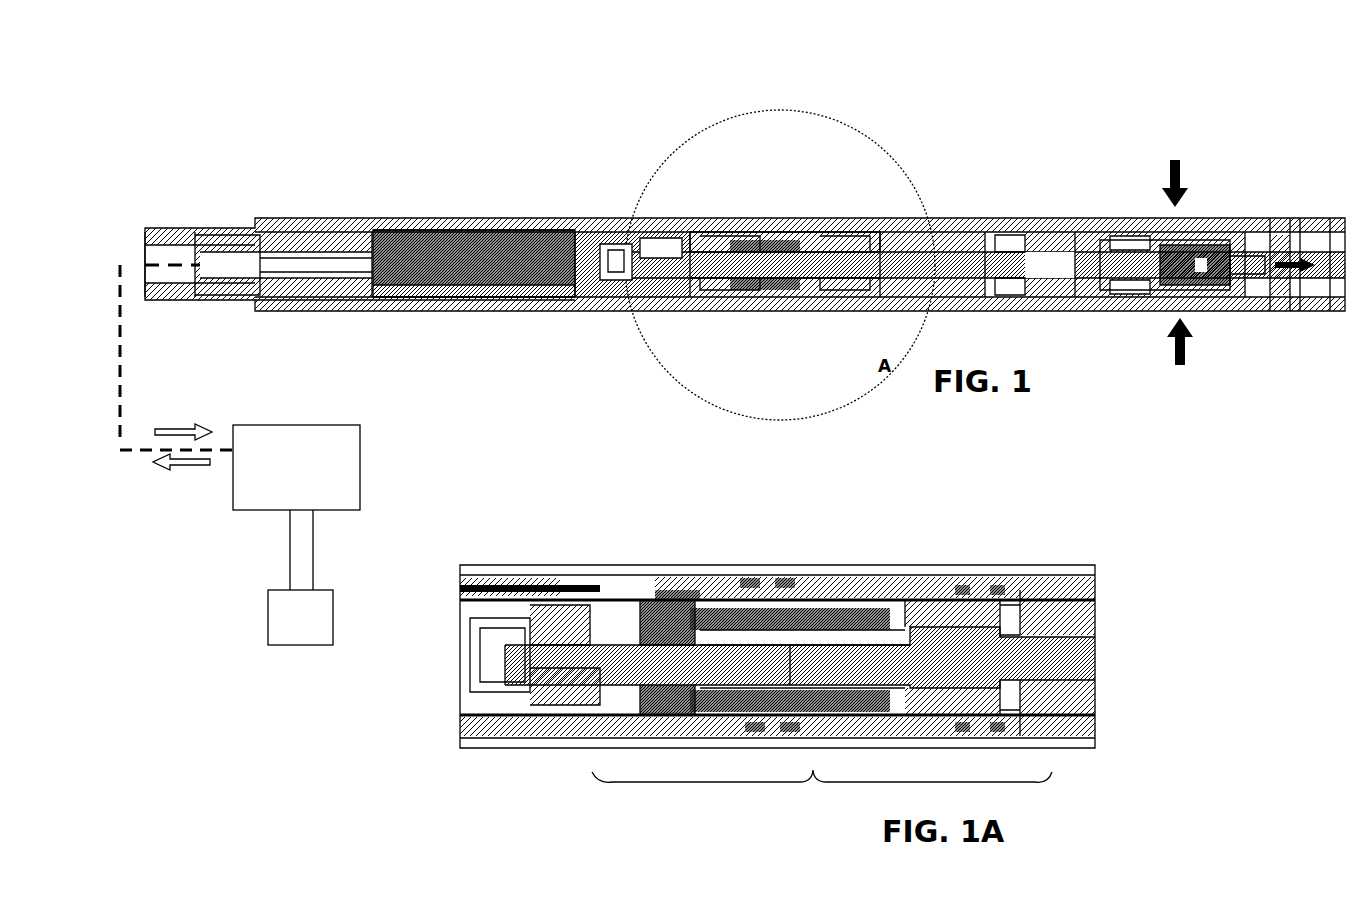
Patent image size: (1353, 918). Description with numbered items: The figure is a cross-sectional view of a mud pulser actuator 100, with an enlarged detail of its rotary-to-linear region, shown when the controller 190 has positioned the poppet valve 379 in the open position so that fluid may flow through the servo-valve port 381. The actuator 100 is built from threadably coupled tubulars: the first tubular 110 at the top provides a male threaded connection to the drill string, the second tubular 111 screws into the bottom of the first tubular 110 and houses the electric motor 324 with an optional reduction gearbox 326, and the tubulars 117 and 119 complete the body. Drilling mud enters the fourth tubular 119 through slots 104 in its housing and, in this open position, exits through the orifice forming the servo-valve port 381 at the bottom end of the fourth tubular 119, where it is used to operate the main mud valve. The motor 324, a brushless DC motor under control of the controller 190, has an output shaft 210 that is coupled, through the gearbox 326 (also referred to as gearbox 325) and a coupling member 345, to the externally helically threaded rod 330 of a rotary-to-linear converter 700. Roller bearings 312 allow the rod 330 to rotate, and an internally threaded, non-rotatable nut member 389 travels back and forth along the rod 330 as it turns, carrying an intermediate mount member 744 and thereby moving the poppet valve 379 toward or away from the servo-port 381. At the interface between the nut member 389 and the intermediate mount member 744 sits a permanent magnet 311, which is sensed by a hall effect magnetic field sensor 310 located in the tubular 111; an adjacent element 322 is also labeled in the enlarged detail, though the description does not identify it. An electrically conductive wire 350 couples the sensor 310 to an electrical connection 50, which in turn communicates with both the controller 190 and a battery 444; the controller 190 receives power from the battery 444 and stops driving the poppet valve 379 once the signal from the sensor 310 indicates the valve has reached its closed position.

In FIG. 1, the pulser actuator 100 is at (270, 122).
In FIG. 1, the electrical connection 50 is at (190, 285).
In FIG. 1, the first tubular 110 is at (243, 290).
In FIG. 1, the second tubular 111 is at (500, 302).
In FIG. 1, the electrically conductive wire 350 is at (525, 220).
In FIG. 1, the electric motor 324 is at (445, 220).
In FIG. 1, the reduction gearbox 326 is at (535, 265).
In FIG. 1, the gearbox 325 is at (560, 282).
In FIG. 1, the output shaft 210 is at (612, 300).
In FIG. 1, the magnetic field sensor 310 is at (700, 218).
In FIG. 1A, the magnetic field sensor 310 is at (565, 590).
In FIG. 1, the permanent magnet 311 is at (815, 235).
In FIG. 1A, the permanent magnet 311 is at (840, 578).
In FIG. 1, the third tubular 117 is at (832, 315).
In FIG. 1A, the third tubular 117 is at (890, 567).
In FIG. 1, the fourth tubular 119 is at (1018, 218).
In FIG. 1, the slots 104 is at (1165, 220).
In FIG. 1, the poppet valve 379 is at (1212, 248).
In FIG. 1, the servo-valve port 381 is at (1240, 260).
In FIG. 1, the controller 190 is at (275, 512).
In FIG. 1, the battery 444 is at (268, 640).
In FIG. 1A, the roller bearings 312 is at (655, 598).
In FIG. 1A, the nut member 389 is at (690, 590).
In FIG. 1A, the seal ring 322 is at (745, 580).
In FIG. 1A, the externally helically threaded rod 330 is at (800, 657).
In FIG. 1A, the coupling member 345 is at (525, 698).
In FIG. 1A, the intermediate mount member 744 is at (875, 652).
In FIG. 1A, the rotary-to-linear converter 700 is at (822, 792).